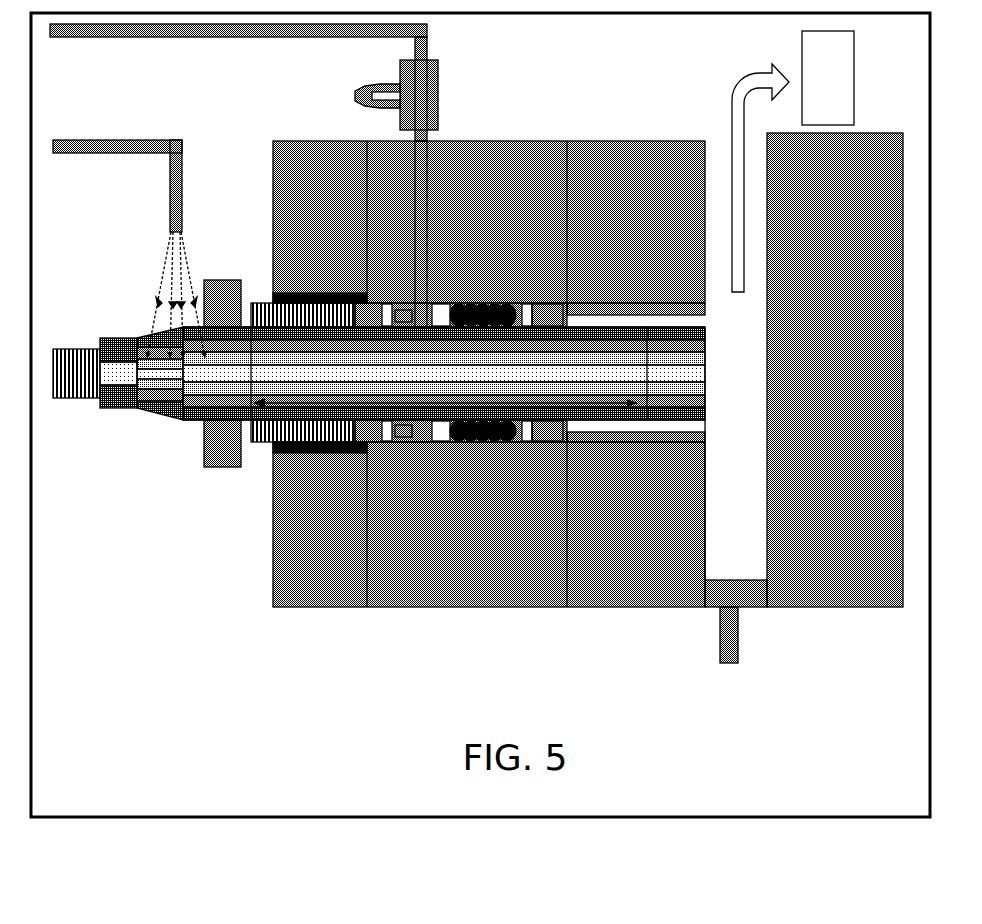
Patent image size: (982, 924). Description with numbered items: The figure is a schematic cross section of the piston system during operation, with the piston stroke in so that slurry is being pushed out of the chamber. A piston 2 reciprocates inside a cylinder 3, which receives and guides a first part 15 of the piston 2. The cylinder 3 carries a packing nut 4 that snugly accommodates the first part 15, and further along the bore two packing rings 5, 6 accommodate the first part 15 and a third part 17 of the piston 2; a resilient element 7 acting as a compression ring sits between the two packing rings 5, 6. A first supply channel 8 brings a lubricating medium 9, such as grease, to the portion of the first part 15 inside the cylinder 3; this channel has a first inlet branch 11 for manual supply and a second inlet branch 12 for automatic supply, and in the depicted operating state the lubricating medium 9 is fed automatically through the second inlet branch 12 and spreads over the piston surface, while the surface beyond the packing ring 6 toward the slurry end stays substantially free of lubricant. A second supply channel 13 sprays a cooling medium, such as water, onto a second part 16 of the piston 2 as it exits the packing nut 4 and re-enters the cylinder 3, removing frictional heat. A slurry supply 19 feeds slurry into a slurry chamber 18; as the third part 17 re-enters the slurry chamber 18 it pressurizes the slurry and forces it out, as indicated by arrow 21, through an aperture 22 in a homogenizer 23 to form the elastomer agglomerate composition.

The piston 2 is at (592, 362).
The cylinder 3 is at (552, 566).
The packing nut 4 is at (220, 443).
The packing ring 5 is at (437, 448).
The packing ring 6 is at (544, 436).
The resilient element 7 is at (503, 302).
The first supply channel 8 is at (214, 38).
The lubricating medium 9 is at (415, 202).
The first inlet branch 11 is at (428, 42).
The second inlet branch 12 is at (365, 95).
The second supply channel 13 is at (175, 160).
The first part of the piston 15 is at (437, 368).
The second part of the piston 16 is at (277, 374).
The third part of the piston 17 is at (628, 388).
The slurry chamber 18 is at (714, 392).
The slurry supply 19 is at (733, 658).
The arrow 21 is at (745, 175).
The aperture 22 is at (809, 102).
The homogenizer 23 is at (152, 820).